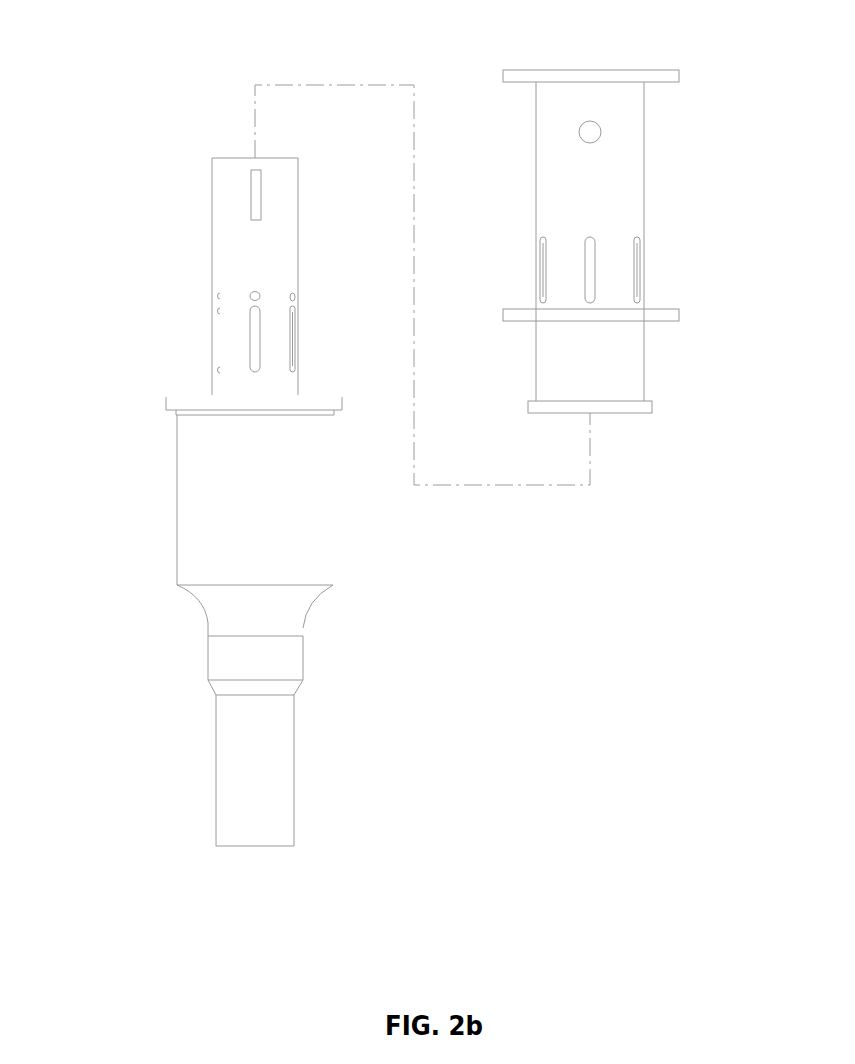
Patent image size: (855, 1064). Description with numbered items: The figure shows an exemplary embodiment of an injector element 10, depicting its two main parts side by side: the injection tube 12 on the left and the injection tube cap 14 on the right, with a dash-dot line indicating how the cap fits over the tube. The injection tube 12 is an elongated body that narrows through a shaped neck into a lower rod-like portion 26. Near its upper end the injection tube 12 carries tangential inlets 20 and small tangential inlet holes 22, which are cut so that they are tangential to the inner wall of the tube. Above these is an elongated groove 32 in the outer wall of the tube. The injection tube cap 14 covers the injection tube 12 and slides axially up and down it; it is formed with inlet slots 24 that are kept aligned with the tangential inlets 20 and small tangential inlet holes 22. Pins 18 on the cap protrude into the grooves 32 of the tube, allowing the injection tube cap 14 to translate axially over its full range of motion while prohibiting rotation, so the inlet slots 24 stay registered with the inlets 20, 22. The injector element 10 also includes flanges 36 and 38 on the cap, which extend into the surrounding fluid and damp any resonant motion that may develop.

The injector element 10 is at (149, 449).
The injection tube 12 is at (177, 550).
The injection tube cap 14 is at (644, 143).
The pins 18 is at (597, 143).
The tangential inlets 20 is at (252, 350).
The small tangential inlet holes 22 is at (254, 291).
The inlet slots 24 is at (595, 268).
The working tip 26 is at (237, 846).
The grooves 32 is at (254, 200).
The flange 36 is at (651, 321).
The flange 38 is at (607, 70).